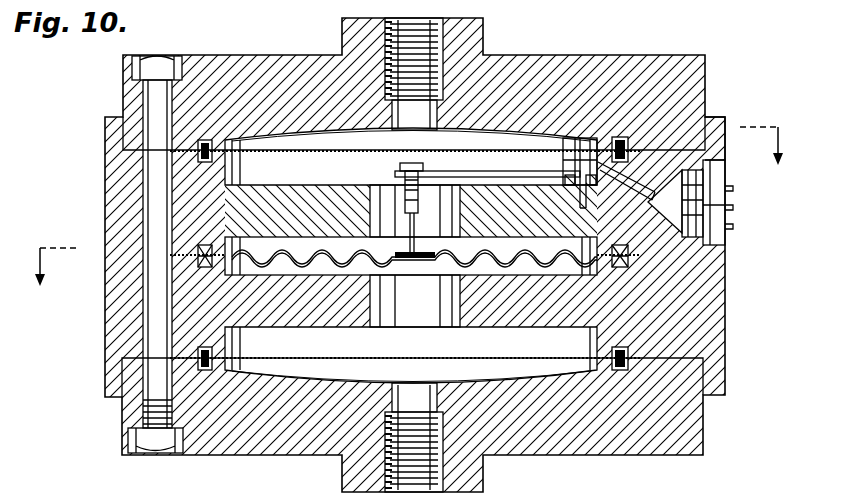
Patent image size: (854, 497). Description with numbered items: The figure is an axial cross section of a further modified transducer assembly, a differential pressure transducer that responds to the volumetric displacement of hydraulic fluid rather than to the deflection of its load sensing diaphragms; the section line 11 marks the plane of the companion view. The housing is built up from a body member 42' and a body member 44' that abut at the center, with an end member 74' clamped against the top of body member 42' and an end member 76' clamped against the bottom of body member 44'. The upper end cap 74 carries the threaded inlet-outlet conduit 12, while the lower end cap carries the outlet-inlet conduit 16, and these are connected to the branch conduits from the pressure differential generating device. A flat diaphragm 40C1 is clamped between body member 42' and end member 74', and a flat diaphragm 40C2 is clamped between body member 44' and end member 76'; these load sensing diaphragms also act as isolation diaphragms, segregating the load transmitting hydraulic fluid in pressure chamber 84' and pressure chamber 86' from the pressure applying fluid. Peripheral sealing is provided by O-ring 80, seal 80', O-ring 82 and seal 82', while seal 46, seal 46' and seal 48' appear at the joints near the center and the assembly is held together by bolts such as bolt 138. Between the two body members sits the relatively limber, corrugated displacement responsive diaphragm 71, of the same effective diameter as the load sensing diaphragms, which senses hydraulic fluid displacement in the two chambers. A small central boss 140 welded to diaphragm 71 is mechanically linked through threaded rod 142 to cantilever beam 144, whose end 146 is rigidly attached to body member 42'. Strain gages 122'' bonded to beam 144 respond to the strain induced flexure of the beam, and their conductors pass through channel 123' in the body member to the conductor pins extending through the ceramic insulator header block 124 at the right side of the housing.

The section line 11- 11 is at (406, 188).
The inlet-outlet conduit 12 is at (430, 47).
The outlet-inlet conduit 16 is at (430, 468).
The body member 42' is at (96, 155).
The body member 44' is at (90, 316).
The seal ring 46 is at (626, 244).
The seal ring 46' is at (199, 241).
The seal ring 48' is at (413, 287).
The displacement responsive diaphragm 71 is at (432, 270).
The end cap 74 is at (90, 80).
The end member 74' is at (273, 38).
The end member 76' is at (222, 474).
The O-ring 80 is at (407, 173).
The seal 80' is at (431, 84).
The O-ring 82 is at (423, 342).
The seal 82' is at (396, 430).
The pressure chamber 84' is at (411, 156).
The pressure chamber 86' is at (411, 355).
The flat diaphragm 40C1 is at (411, 139).
The flat diaphragm 40C2 is at (466, 352).
The strain gages 122'' is at (552, 173).
The channel 123' is at (726, 112).
The insulator header block 124 is at (728, 224).
The clamping bolt 138 is at (150, 338).
The central boss 140 is at (418, 240).
The threaded rod 142 is at (400, 185).
The cantilever beam 144 is at (452, 168).
The beam end 146 is at (600, 162).